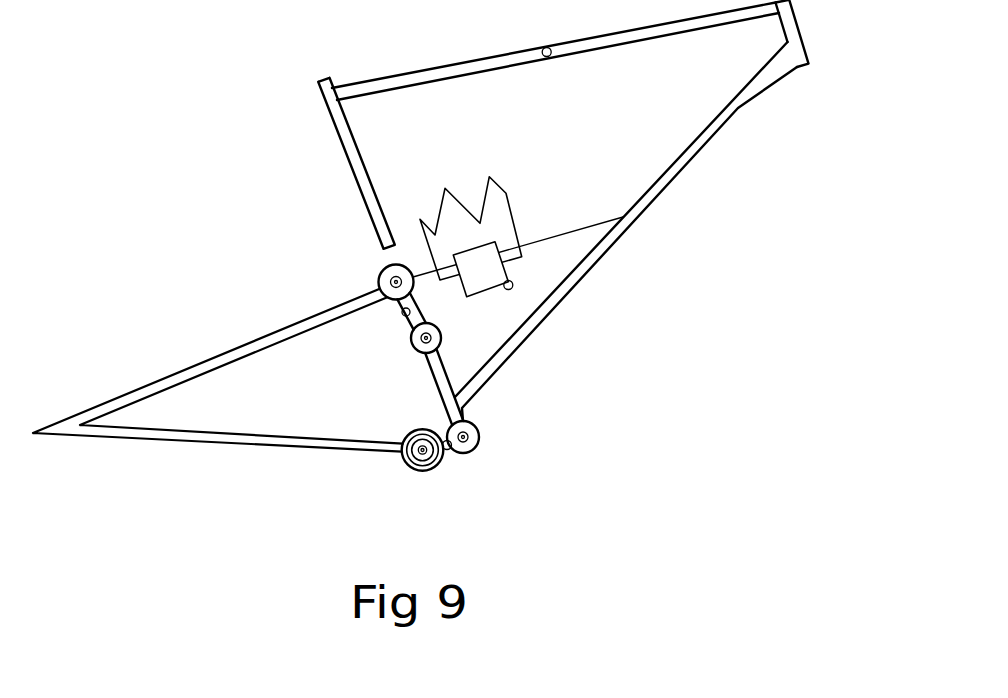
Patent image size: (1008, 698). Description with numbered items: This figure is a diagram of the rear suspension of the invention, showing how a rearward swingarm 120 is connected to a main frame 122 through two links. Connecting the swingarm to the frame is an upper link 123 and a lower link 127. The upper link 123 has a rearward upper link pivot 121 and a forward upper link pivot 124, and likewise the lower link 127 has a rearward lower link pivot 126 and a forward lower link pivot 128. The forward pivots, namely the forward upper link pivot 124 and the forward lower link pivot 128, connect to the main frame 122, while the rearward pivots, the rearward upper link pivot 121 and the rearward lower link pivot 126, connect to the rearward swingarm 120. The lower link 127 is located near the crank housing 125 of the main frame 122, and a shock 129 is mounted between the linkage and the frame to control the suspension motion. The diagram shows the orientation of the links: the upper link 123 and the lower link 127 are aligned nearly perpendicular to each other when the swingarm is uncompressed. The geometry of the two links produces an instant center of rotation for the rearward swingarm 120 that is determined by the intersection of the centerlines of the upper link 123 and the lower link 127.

The rearward swingarm 120 is at (233, 350).
The rearward upper link pivot 121 is at (382, 276).
The main frame 122 is at (545, 56).
The upper link 123 is at (404, 315).
The forward upper link pivot 124 is at (424, 343).
The crank housing 125 is at (418, 470).
The rearward lower link pivot 126 is at (432, 473).
The lower link 127 is at (449, 449).
The forward lower link pivot 128 is at (470, 438).
The shock 129 is at (512, 288).